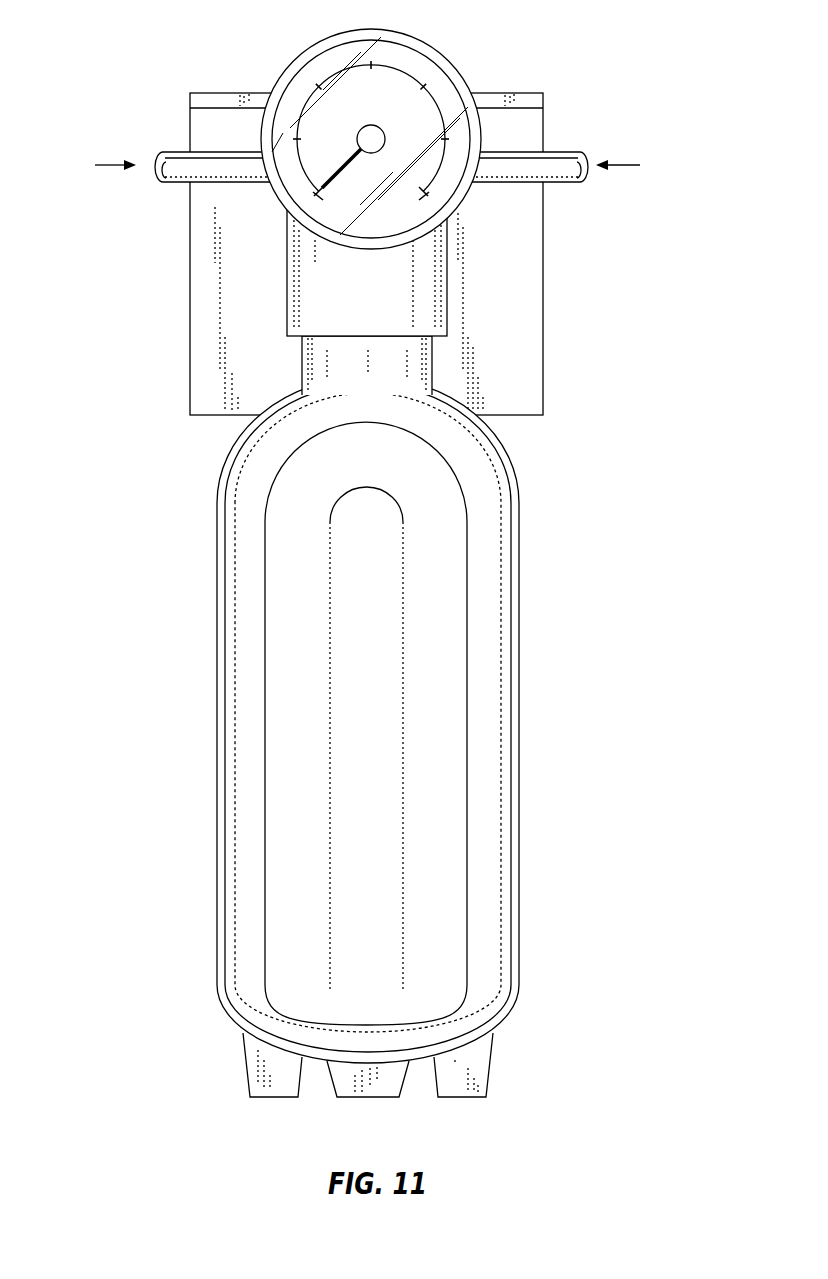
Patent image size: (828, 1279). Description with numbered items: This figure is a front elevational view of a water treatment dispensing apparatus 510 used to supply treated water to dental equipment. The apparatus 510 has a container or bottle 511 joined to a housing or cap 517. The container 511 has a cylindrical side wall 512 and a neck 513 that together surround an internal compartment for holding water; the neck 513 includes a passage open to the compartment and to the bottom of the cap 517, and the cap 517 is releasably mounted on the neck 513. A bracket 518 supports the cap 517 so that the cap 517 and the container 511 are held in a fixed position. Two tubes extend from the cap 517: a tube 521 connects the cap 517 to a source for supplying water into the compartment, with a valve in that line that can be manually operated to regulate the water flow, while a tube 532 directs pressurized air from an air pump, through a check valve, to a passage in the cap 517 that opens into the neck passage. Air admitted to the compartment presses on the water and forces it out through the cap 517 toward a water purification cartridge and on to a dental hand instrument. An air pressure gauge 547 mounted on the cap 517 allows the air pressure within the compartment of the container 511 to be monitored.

The water treatment dispensing apparatus 510 is at (368, 563).
The container 511 is at (521, 755).
The cylindrical side wall 512 is at (234, 628).
The neck 513 is at (318, 358).
The cap 517 is at (287, 288).
The bracket 518 is at (203, 275).
The tube 521 is at (495, 167).
The tube 532 is at (183, 172).
The air pressure gauge 547 is at (457, 63).